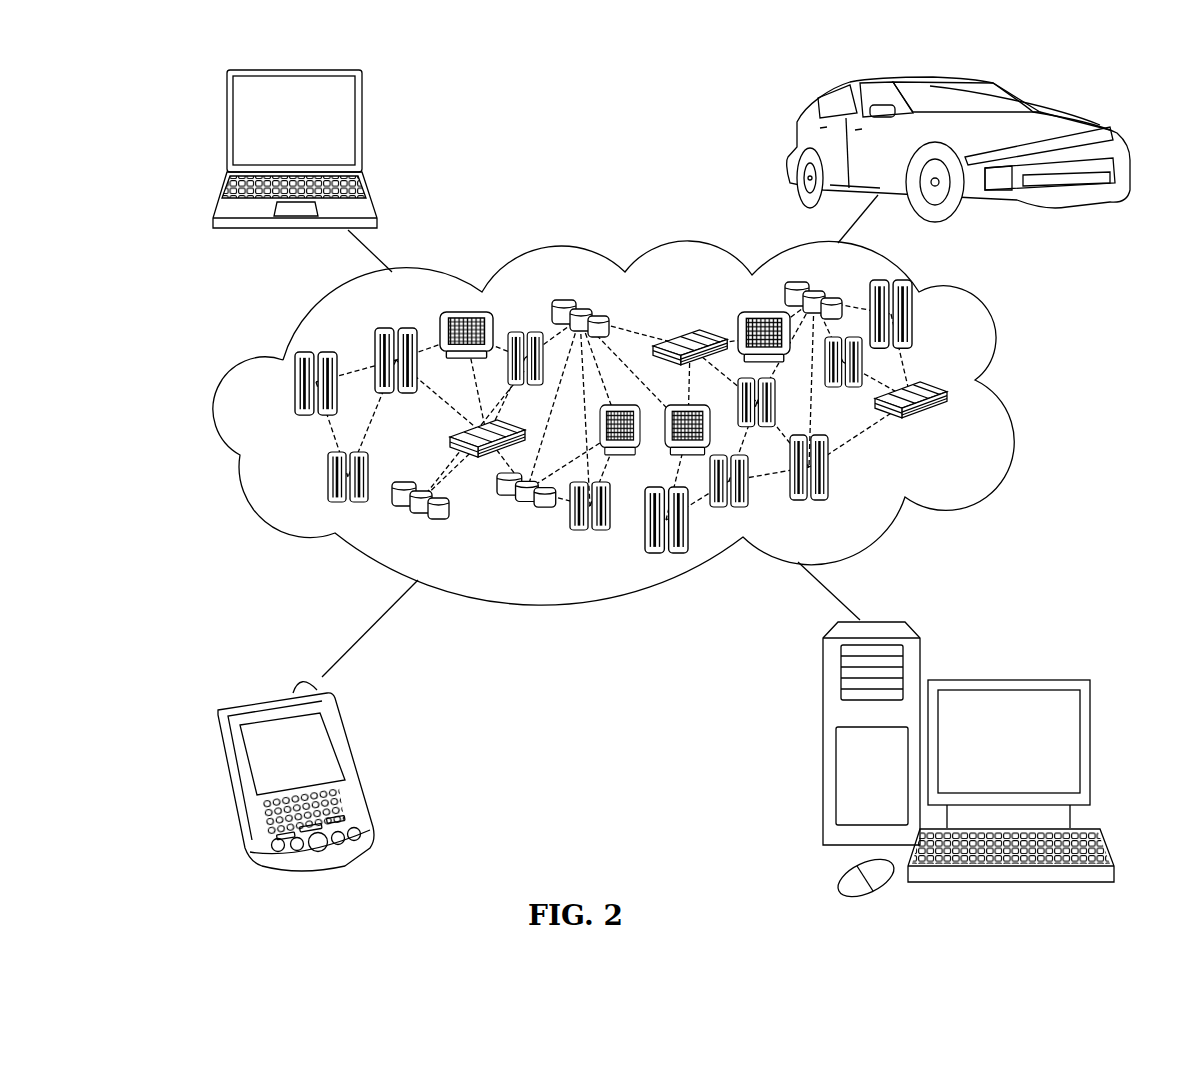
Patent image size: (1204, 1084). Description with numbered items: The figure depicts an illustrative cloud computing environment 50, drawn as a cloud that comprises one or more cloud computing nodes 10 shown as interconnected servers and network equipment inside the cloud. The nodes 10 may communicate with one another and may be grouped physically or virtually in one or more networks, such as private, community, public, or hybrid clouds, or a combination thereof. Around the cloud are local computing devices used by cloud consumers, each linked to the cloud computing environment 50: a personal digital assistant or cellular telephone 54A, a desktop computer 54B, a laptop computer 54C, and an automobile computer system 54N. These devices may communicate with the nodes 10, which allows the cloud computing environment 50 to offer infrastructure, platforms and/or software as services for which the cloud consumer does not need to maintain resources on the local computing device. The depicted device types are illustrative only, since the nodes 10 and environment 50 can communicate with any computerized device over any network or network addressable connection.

The cloud computing node 10 is at (676, 416).
The cloud computing environment 50 is at (637, 423).
The personal digital assistant or cellular telephone 54A is at (322, 776).
The desktop computer 54B is at (968, 763).
The laptop computer 54C is at (324, 149).
The automobile computer system 54N is at (925, 149).